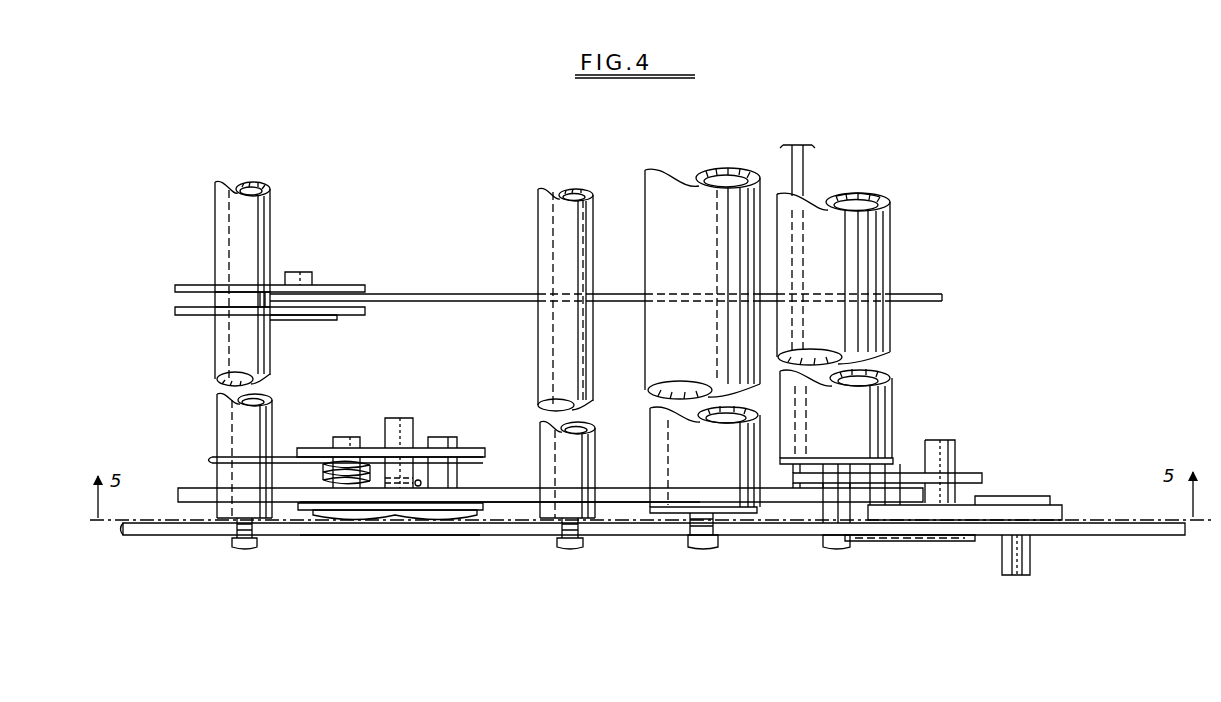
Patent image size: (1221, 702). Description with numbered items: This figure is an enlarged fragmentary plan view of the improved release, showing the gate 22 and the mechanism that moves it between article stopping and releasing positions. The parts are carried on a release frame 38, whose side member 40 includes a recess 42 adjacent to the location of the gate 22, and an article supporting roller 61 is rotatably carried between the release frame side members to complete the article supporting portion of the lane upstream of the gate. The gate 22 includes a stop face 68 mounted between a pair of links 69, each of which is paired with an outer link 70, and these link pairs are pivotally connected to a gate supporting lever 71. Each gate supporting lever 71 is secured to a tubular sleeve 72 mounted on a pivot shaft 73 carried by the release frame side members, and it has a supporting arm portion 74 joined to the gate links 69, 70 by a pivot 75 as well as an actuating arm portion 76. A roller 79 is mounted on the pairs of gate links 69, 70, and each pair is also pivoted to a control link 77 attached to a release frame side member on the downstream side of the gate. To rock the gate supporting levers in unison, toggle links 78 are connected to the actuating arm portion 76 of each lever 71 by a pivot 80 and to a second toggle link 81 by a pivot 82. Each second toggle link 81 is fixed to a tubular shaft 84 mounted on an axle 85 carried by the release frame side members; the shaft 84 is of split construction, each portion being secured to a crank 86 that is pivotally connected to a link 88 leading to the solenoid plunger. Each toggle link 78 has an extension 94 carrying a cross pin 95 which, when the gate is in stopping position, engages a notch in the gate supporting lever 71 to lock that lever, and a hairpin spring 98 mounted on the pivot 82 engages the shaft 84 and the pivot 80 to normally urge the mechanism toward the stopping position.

The gate 22 is at (887, 198).
The release frame 38 is at (1085, 541).
The side member 40 is at (452, 535).
The recess 42 is at (735, 528).
The article supporting roller 61 is at (683, 170).
The stop face 68 is at (800, 186).
The link 69 is at (913, 467).
The outer link 70 is at (815, 535).
The gate supporting lever 71 is at (523, 504).
The tubular sleeve 72 is at (578, 190).
The pivot shaft 73 is at (575, 547).
The supporting arm portion 74 is at (790, 503).
The pivot 75 is at (895, 462).
The actuating arm portion 76 is at (507, 490).
The control link 77 is at (970, 500).
The toggle link 78 is at (308, 448).
The roller 79 is at (893, 267).
The pivot 80 is at (407, 420).
The second toggle link 81 is at (295, 505).
The pivot 82 is at (353, 435).
The tubular shaft 84 is at (267, 227).
The axle 85 is at (245, 549).
The crank 86 is at (343, 283).
The link 88 is at (445, 293).
The extension 94 is at (477, 448).
The cross pin 95 is at (448, 435).
The hairpin spring 98 is at (283, 457).